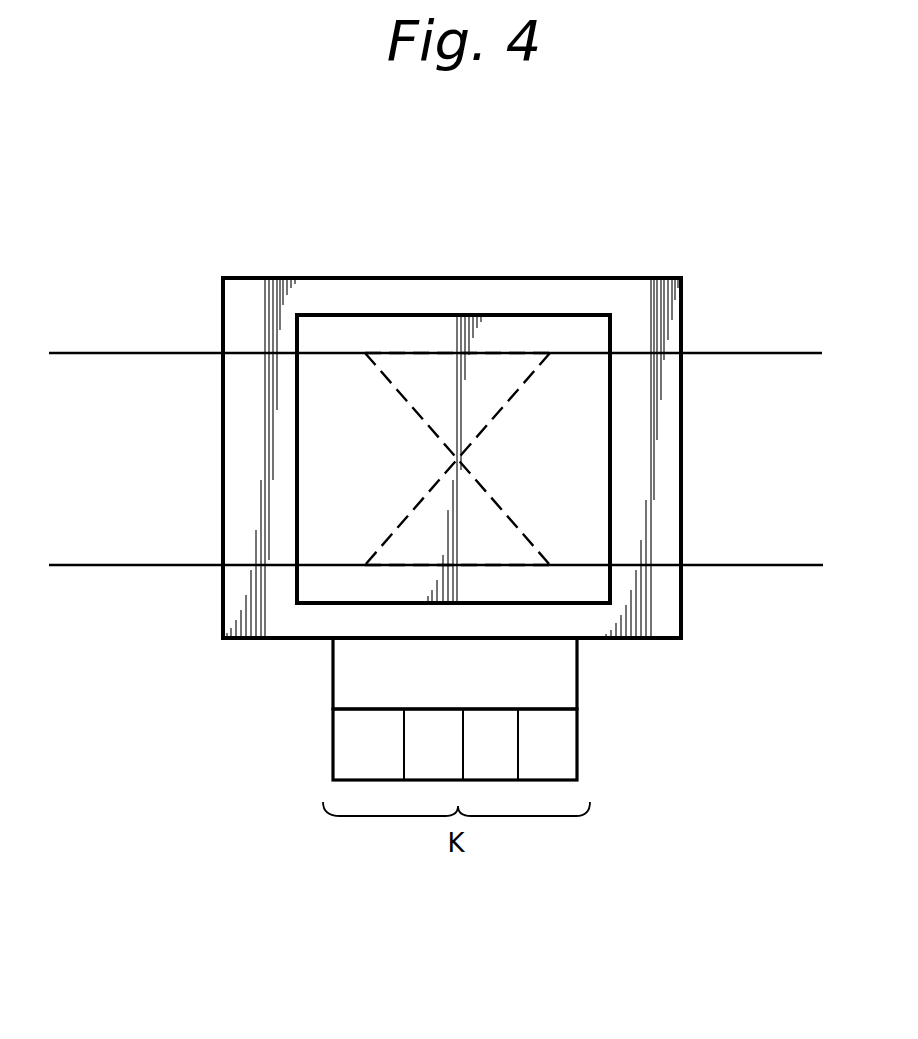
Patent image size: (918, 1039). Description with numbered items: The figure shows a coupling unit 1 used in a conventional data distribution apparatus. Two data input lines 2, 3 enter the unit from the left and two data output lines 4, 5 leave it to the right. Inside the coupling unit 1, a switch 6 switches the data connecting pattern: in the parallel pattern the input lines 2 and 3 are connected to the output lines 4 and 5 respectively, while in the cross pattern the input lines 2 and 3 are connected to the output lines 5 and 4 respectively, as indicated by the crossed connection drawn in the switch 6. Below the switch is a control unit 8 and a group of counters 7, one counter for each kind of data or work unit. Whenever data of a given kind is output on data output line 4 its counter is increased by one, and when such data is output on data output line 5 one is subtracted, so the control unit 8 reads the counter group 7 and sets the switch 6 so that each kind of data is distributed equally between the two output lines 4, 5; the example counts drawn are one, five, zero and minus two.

The coupling unit 1 is at (473, 278).
The data input line 2 is at (99, 352).
The data input line 3 is at (96, 564).
The data output line 4 is at (779, 352).
The data output line 5 is at (781, 564).
The switch 6 is at (599, 314).
The group of counters 7 is at (578, 752).
The control unit 8 is at (578, 677).